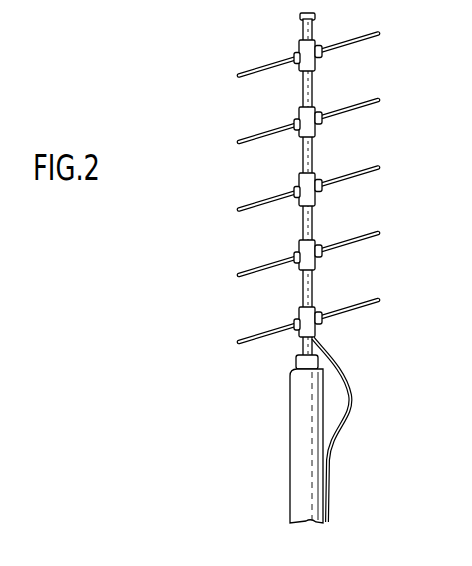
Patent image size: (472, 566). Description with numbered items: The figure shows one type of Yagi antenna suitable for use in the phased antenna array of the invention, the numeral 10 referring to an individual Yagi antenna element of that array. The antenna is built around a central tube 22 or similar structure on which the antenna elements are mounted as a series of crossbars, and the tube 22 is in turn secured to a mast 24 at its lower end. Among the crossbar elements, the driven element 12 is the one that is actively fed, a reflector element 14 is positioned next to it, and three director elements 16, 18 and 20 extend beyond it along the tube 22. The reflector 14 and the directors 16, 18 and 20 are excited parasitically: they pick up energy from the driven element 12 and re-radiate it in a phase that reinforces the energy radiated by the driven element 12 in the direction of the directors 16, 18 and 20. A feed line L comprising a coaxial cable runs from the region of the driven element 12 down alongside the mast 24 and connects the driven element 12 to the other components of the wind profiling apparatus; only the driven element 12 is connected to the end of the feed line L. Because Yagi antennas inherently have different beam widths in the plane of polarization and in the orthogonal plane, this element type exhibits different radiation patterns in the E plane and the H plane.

The Yagi antenna element 10 is at (219, 226).
The driven element 12 is at (381, 306).
The reflector element 14 is at (381, 238).
The director element 16 is at (381, 170).
The director element 18 is at (381, 101).
The director element 20 is at (379, 31).
The tube 22 is at (303, 83).
The mast 24 is at (298, 429).
The feed line L is at (361, 377).